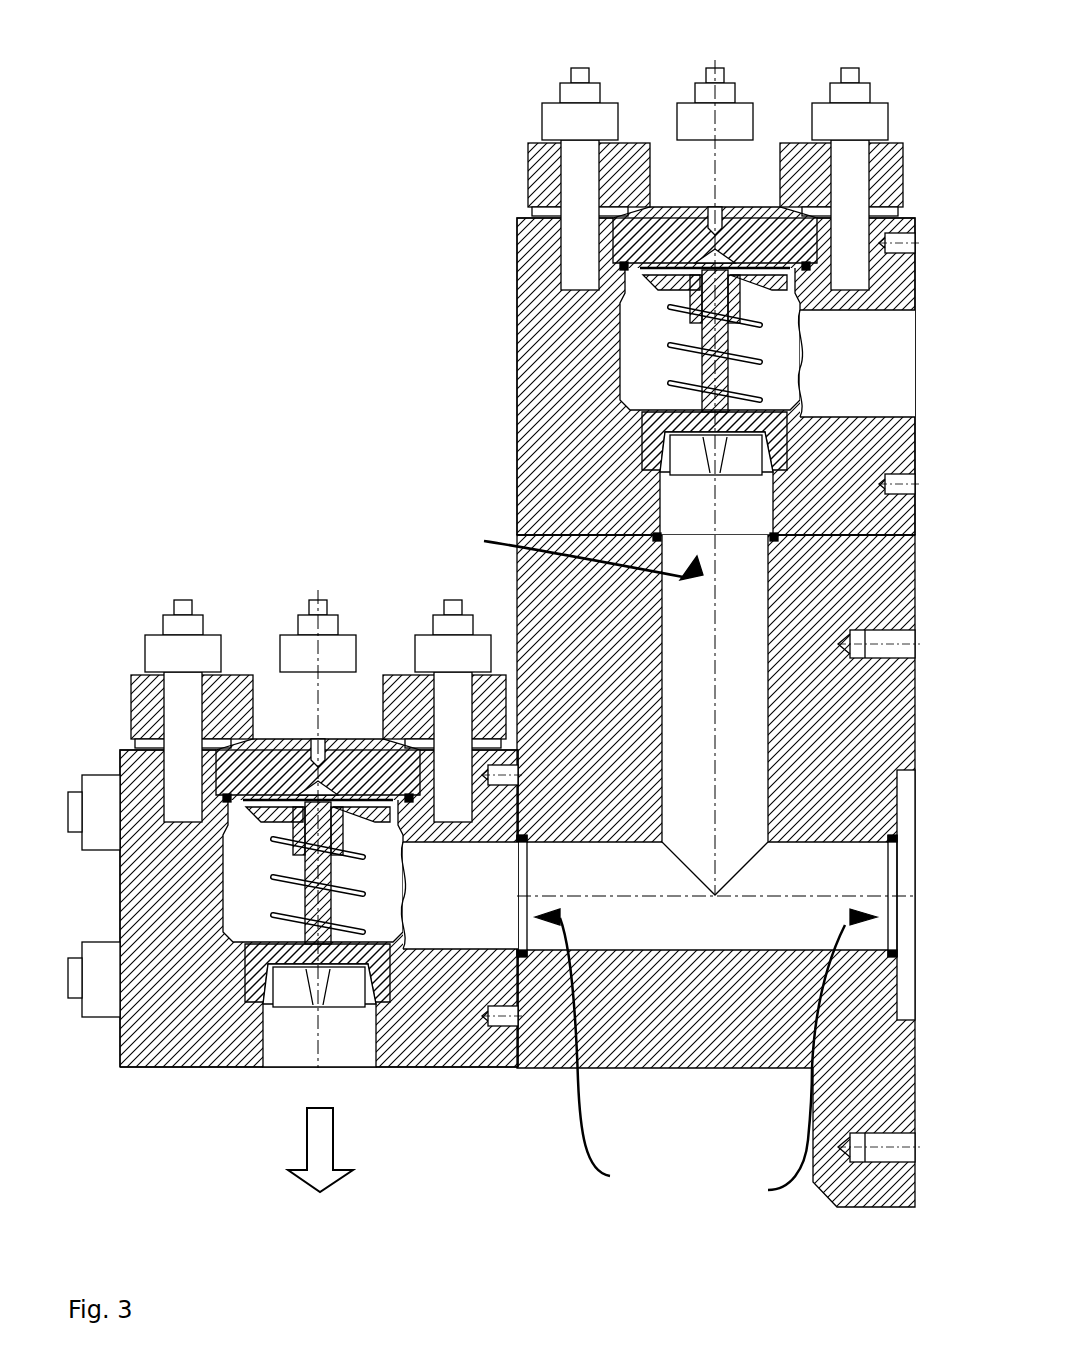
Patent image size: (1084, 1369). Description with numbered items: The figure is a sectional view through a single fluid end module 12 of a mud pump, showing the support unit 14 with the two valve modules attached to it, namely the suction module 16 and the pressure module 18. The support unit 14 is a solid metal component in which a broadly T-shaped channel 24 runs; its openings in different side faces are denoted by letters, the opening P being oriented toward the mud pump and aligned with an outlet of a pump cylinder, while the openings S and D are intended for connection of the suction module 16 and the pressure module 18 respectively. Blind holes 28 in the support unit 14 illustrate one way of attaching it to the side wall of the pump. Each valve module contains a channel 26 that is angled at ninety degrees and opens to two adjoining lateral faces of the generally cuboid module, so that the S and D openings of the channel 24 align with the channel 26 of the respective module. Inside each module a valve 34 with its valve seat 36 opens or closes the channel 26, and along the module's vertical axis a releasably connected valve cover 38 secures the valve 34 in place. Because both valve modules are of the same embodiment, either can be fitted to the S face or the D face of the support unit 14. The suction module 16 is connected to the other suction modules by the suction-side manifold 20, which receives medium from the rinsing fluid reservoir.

The fluid end module 12 is at (504, 663).
The support unit 14 is at (545, 1072).
The suction module 16 is at (170, 1068).
The pressure module 18 is at (515, 262).
The suction-side manifold 20 is at (320, 1178).
The channel 24 is at (755, 765).
The channel 26 is at (850, 357).
The blind holes 28 is at (905, 648).
The valve 34 is at (700, 378).
The valve seat 36 is at (640, 432).
The valve cover 38 is at (668, 205).
The suction module side opening S is at (584, 1050).
The mud pump side opening P is at (811, 1054).
The pressure module side opening D is at (583, 550).